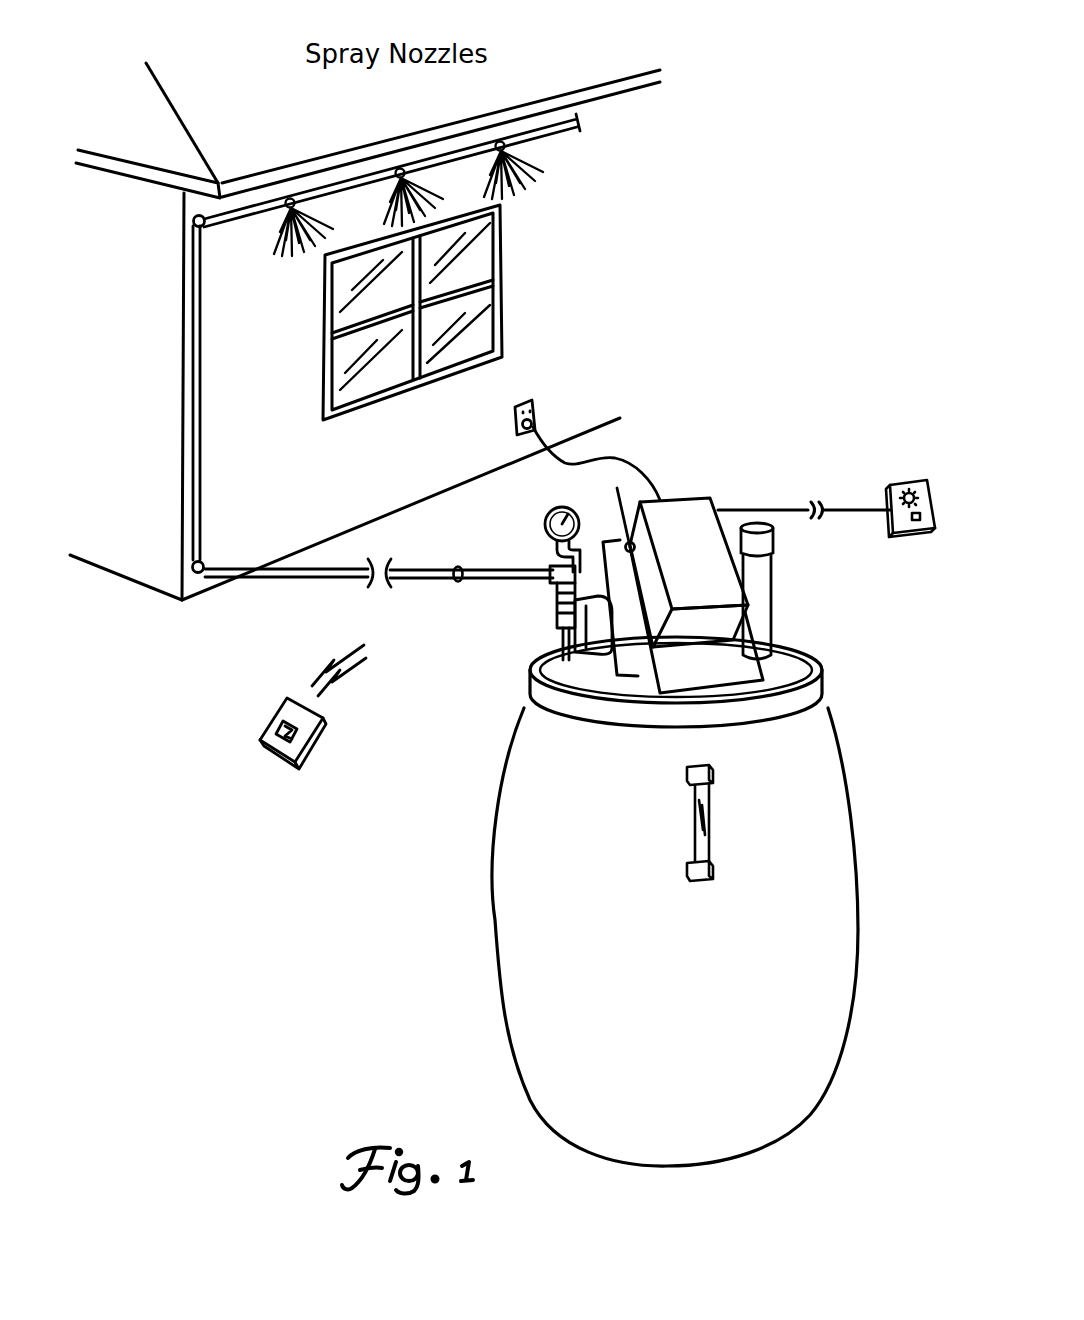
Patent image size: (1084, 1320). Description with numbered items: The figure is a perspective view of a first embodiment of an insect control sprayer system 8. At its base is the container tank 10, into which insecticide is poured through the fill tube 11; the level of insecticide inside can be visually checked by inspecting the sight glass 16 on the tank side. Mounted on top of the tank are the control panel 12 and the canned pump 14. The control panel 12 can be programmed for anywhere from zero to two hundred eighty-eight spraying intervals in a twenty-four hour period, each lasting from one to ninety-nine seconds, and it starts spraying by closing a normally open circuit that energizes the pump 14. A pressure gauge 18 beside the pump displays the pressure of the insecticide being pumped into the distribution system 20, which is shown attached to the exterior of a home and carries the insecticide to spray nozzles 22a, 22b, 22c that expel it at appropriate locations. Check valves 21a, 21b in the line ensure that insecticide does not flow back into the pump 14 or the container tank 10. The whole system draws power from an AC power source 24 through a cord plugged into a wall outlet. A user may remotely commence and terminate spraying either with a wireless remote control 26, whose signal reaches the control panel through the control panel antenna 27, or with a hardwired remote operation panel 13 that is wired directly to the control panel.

The insect control sprayer system 8 is at (760, 405).
The container tank 10 is at (515, 863).
The fill tube 11 is at (762, 593).
The control panel 12 is at (693, 510).
The hardwired remote operation panel 13 is at (892, 488).
The canned pump 14 is at (550, 645).
The sight glass 16 is at (703, 800).
The pressure gauge 18 is at (541, 518).
The distribution system 20 is at (223, 577).
The check valve 21a is at (560, 627).
The check valve 21b is at (431, 595).
The spray nozzle 22a is at (291, 198).
The spray nozzle 22b is at (400, 168).
The spray nozzle 22c is at (500, 142).
The AC power source 24 is at (540, 420).
The wireless remote control 26 is at (261, 744).
The control panel antenna 27 is at (615, 507).